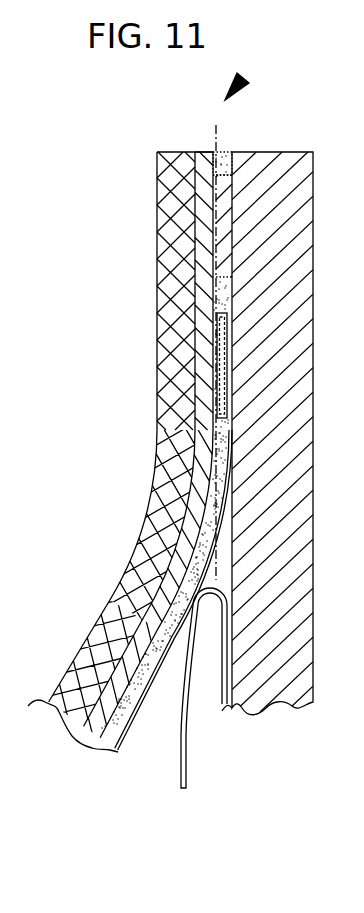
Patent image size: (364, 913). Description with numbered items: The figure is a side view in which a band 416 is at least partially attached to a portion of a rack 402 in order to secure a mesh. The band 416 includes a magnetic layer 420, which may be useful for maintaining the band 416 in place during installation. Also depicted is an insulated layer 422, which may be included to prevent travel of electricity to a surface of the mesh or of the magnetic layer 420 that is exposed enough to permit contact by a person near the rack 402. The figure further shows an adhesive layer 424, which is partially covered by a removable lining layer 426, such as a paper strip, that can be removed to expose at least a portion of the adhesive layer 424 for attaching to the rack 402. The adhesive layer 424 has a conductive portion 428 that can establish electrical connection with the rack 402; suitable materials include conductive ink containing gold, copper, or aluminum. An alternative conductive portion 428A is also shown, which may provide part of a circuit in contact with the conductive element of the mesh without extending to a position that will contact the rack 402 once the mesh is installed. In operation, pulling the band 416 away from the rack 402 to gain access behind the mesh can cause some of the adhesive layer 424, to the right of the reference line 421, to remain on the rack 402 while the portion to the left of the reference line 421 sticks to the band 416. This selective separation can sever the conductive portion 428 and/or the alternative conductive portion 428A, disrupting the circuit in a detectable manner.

The rack 402 is at (263, 165).
The band 416 is at (243, 78).
The magnetic layer 420 is at (173, 281).
The reference line 421 is at (211, 202).
The insulated layer 422 is at (208, 157).
The adhesive layer 424 is at (92, 750).
The removable lining layer 426 is at (190, 745).
The conductive portion 428 is at (222, 229).
The alternative conductive portion 428A is at (218, 359).